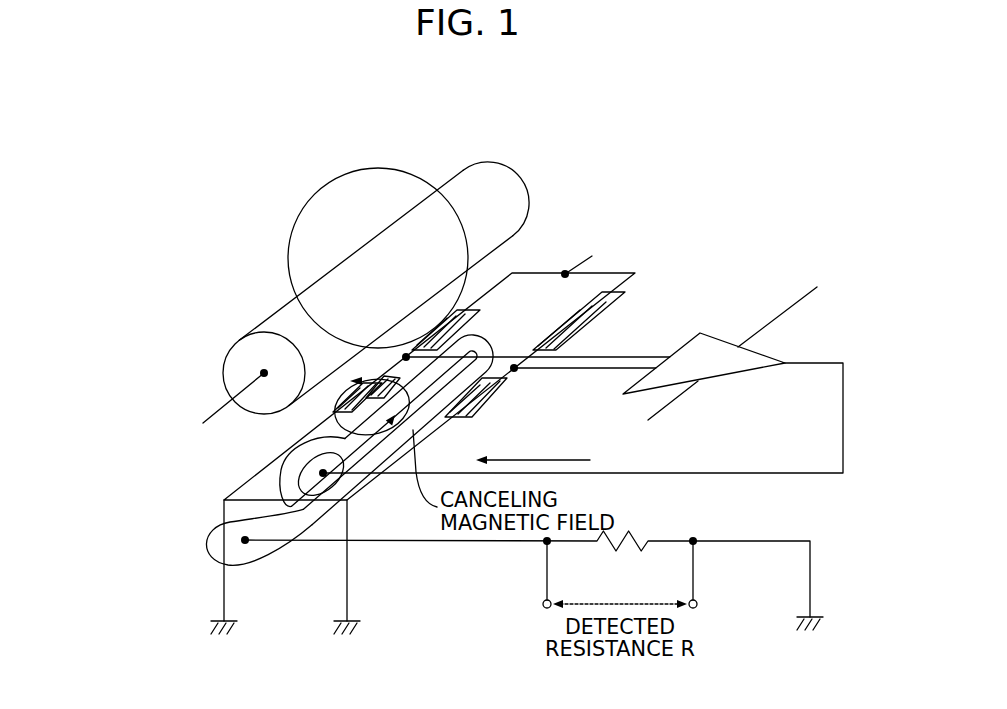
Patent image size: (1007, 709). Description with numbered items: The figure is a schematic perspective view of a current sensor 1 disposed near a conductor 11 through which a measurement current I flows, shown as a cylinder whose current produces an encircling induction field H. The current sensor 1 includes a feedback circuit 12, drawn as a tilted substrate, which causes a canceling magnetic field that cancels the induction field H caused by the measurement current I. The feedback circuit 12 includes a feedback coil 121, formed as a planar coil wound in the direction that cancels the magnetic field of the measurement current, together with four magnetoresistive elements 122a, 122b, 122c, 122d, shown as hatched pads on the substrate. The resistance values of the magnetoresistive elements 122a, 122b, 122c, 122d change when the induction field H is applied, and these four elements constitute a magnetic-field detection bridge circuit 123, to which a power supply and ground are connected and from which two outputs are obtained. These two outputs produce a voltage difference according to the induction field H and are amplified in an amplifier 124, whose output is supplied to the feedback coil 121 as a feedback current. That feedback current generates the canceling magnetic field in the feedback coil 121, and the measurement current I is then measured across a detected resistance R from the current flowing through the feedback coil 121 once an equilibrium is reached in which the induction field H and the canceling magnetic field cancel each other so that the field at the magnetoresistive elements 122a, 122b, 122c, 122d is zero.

The current sensor 1 is at (583, 176).
The conductor 11 is at (288, 310).
The feedback circuit 12 is at (686, 245).
The feedback coil 121 is at (255, 568).
The magnetoresistive element 122a is at (332, 416).
The magnetoresistive element 122b is at (474, 311).
The magnetoresistive element 122c is at (596, 319).
The magnetoresistive element 122d is at (476, 408).
The magnetic-field detection bridge circuit 123 is at (586, 285).
The amplifier 124 is at (768, 356).